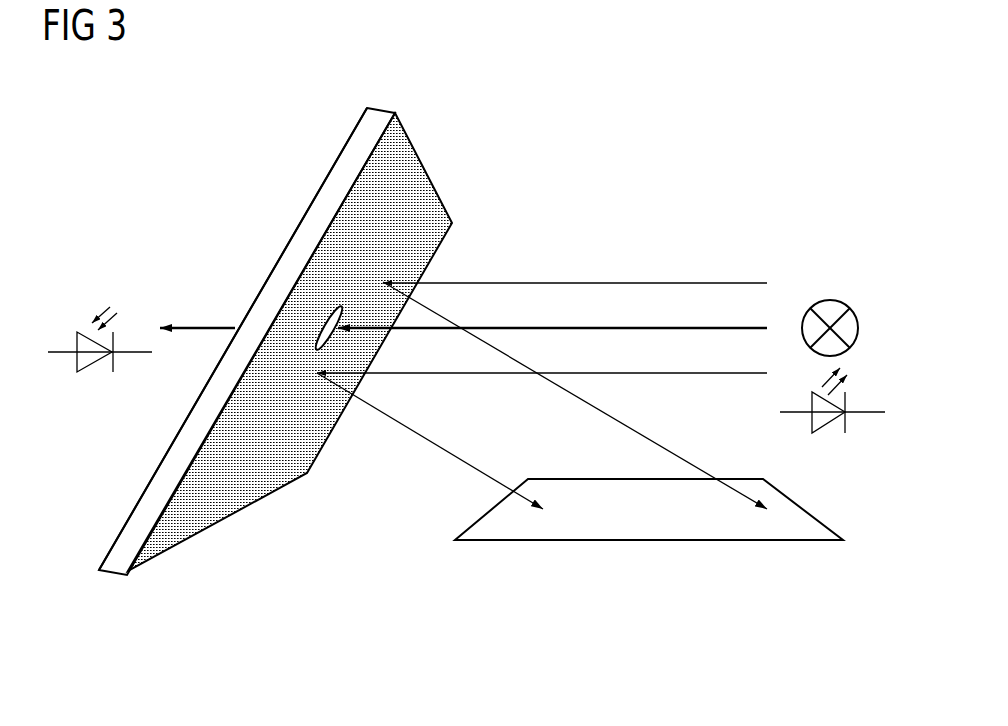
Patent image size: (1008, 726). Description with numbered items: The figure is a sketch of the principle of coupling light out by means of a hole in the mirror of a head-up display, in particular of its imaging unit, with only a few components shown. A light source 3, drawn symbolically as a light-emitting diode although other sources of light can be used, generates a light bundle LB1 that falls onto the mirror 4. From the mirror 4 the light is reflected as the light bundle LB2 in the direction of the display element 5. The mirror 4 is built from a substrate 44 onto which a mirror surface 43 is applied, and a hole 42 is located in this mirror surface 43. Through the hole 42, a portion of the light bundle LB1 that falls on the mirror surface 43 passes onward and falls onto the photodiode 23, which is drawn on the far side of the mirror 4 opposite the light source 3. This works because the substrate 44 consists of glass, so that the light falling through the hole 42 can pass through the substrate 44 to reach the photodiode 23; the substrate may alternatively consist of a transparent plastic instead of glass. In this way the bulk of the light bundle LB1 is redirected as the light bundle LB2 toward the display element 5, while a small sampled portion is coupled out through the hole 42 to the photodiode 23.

The light source 3 is at (828, 306).
The mirror 4 is at (313, 307).
The display element 5 is at (648, 527).
The photodiode 23 is at (90, 358).
The hole 42 is at (320, 347).
The mirror surface 43 is at (403, 193).
The substrate 44 is at (327, 206).
The light bundle LB1 is at (605, 310).
The light bundle LB2 is at (460, 443).